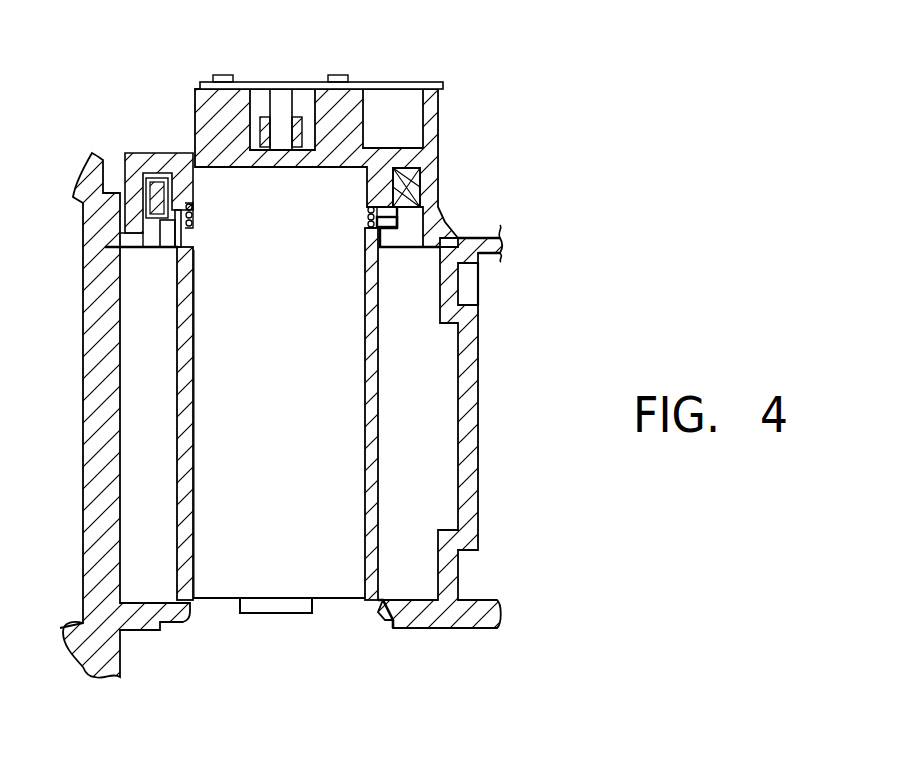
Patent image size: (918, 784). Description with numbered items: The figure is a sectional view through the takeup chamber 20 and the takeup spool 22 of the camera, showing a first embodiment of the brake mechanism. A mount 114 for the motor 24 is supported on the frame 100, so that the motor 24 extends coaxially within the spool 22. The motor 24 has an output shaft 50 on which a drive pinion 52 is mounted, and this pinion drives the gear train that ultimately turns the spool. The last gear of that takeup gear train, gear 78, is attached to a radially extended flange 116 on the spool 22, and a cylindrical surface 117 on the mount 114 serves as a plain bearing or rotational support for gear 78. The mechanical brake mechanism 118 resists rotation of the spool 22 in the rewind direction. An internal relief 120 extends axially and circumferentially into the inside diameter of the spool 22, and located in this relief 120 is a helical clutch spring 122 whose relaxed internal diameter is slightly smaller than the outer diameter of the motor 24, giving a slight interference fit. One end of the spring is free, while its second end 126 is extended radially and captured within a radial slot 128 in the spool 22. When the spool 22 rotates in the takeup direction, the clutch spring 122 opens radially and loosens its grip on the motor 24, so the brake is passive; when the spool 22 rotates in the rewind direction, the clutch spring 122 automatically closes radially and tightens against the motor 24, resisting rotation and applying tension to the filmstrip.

The takeup chamber 20 is at (448, 456).
The takeup spool 22 is at (187, 443).
The motor 24 is at (353, 590).
The output shaft 50 is at (278, 87).
The drive pinion 52 is at (297, 117).
The gear 78 is at (440, 232).
The frame 100 is at (92, 418).
The mount 114 is at (437, 130).
The radially extended flange 116 is at (412, 248).
The cylindrical surface 117 is at (170, 170).
The mechanical brake mechanism 118 is at (366, 209).
The internal relief 120 is at (193, 228).
The helical clutch spring 122 is at (195, 217).
The second end 126 is at (395, 225).
The radial slot 128 is at (413, 220).